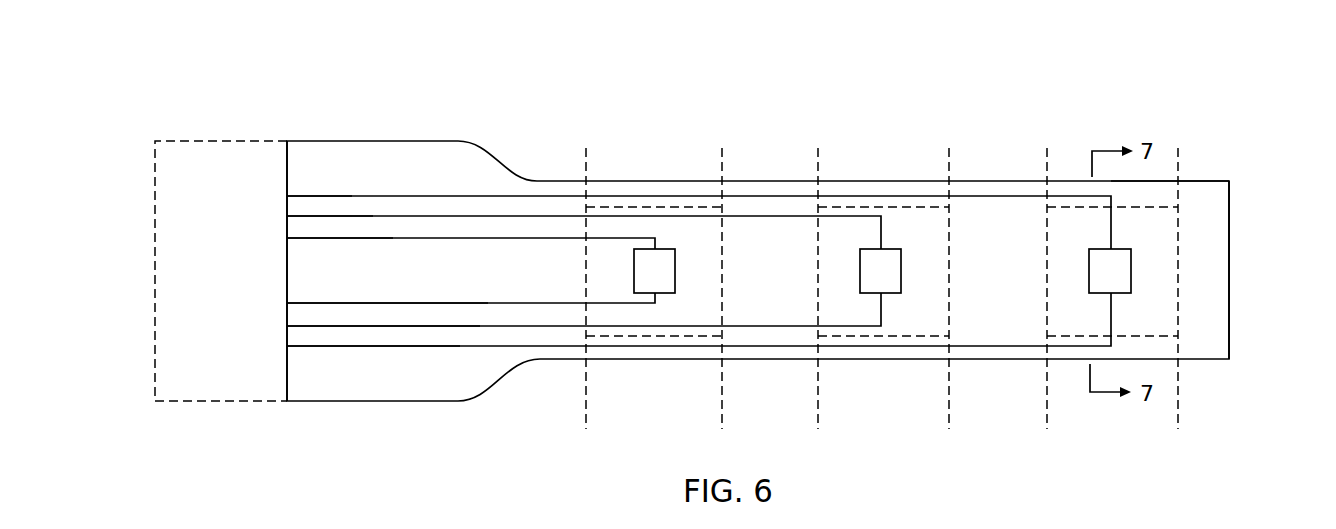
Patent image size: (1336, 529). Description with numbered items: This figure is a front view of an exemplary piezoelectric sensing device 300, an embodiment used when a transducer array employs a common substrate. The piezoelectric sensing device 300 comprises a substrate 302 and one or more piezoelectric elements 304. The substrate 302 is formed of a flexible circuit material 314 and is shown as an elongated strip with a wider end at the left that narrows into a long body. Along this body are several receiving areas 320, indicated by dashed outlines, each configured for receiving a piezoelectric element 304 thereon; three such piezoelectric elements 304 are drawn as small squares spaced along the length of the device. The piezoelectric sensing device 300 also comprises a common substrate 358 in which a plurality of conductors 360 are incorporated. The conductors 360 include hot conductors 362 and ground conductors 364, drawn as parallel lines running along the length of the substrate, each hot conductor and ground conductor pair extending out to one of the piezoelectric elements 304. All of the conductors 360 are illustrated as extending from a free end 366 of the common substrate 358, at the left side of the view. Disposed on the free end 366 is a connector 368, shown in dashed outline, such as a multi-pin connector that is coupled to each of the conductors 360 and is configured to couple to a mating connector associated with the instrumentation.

The piezoelectric sensing device 300 is at (1137, 54).
The substrate 302 is at (1240, 213).
The piezoelectric element 304 is at (675, 262).
The flexible circuit material 314 is at (1229, 270).
The receiving areas 320 is at (723, 168).
The common substrate 358 is at (1214, 180).
The conductors 360 is at (262, 200).
The hot conductors 362 is at (352, 196).
The ground conductors 364 is at (460, 346).
The free end 366 is at (260, 134).
The connector 368 is at (208, 140).